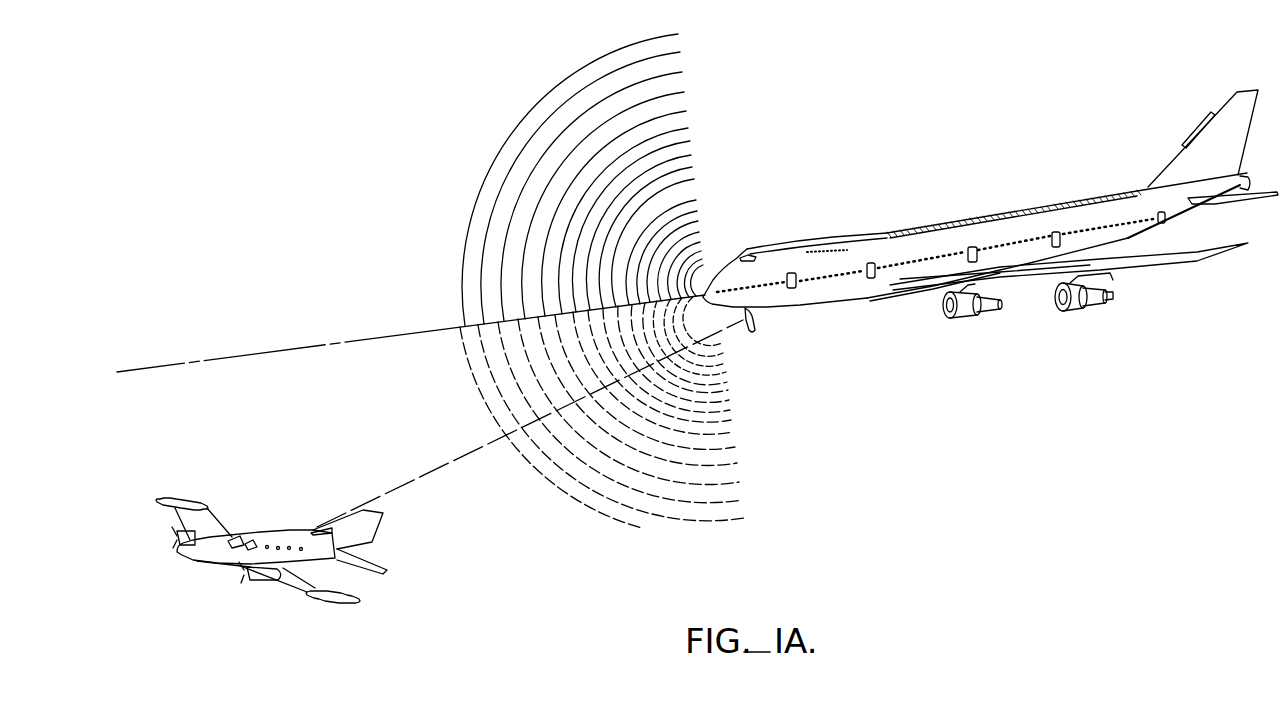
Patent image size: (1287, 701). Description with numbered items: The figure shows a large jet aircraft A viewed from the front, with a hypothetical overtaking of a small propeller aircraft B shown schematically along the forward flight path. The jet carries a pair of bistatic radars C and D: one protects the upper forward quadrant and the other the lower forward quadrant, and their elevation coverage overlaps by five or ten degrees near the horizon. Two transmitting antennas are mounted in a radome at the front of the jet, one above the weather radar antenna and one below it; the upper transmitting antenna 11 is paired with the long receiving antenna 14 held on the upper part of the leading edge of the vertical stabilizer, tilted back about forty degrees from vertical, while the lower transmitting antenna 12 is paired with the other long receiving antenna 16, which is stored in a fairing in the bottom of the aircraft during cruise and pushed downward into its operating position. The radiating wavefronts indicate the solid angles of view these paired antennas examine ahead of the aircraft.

The transmitting antenna 11 is at (710, 274).
The transmitting antenna 12 is at (707, 299).
The receiving antenna 14 is at (1196, 130).
The receiving antenna 16 is at (754, 327).
The large aircraft A is at (990, 228).
The small aircraft B is at (262, 520).
The bistatic radar C is at (1203, 136).
The bistatic radar D is at (749, 336).